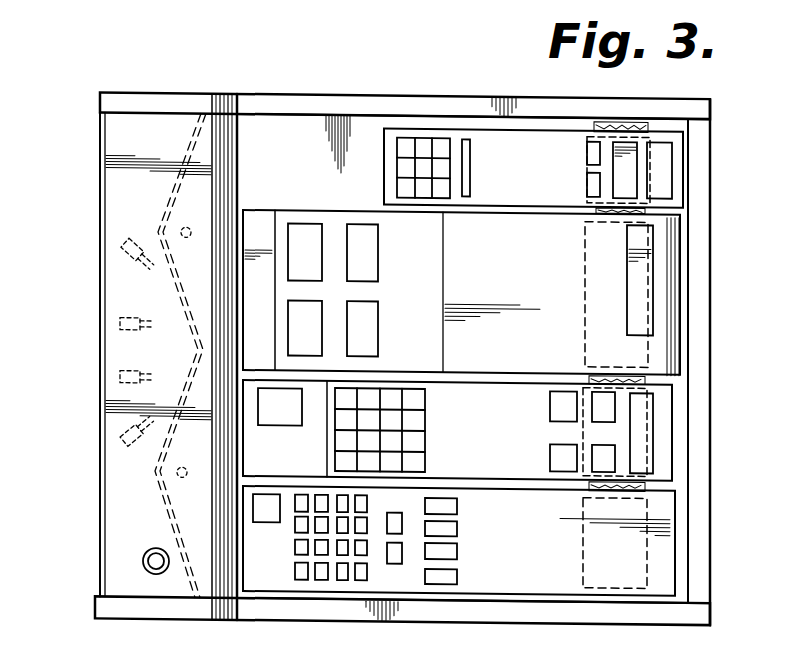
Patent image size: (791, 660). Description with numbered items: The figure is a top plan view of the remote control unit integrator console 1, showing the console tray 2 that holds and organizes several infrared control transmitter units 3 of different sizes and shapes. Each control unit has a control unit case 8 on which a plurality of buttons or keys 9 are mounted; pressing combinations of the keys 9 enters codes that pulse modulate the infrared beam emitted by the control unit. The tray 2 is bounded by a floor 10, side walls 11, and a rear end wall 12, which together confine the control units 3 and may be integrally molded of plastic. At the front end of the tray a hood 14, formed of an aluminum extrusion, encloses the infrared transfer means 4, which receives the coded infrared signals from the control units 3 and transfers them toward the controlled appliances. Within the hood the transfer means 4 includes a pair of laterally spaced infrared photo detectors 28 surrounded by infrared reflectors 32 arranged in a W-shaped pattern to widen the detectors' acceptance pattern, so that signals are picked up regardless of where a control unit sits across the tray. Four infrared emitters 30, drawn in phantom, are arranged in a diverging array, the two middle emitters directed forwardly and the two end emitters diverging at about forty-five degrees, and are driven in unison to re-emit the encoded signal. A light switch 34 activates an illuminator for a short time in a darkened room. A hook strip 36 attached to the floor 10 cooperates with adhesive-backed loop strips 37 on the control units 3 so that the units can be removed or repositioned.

The remote control unit integrator console 1 is at (74, 151).
The console tray 2 is at (336, 97).
The infrared control transmitter units 3 is at (681, 223).
The infrared transfer means 4 is at (138, 370).
The control unit case 8 is at (336, 208).
The buttons or keys 9 is at (398, 160).
The floor 10 is at (293, 120).
The side walls 11 is at (469, 104).
The rear end wall 12 is at (697, 296).
The hood 14 is at (112, 194).
The infrared photo detectors 28 is at (185, 228).
The infrared emitters 30 is at (129, 243).
The infrared reflectors 32 is at (192, 148).
The light switch 34 is at (150, 568).
The hook strip 36 is at (624, 368).
The loop strips 37 is at (584, 279).